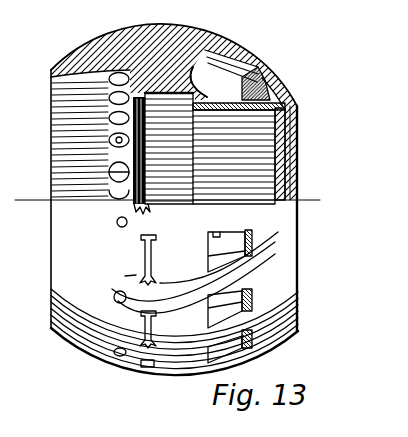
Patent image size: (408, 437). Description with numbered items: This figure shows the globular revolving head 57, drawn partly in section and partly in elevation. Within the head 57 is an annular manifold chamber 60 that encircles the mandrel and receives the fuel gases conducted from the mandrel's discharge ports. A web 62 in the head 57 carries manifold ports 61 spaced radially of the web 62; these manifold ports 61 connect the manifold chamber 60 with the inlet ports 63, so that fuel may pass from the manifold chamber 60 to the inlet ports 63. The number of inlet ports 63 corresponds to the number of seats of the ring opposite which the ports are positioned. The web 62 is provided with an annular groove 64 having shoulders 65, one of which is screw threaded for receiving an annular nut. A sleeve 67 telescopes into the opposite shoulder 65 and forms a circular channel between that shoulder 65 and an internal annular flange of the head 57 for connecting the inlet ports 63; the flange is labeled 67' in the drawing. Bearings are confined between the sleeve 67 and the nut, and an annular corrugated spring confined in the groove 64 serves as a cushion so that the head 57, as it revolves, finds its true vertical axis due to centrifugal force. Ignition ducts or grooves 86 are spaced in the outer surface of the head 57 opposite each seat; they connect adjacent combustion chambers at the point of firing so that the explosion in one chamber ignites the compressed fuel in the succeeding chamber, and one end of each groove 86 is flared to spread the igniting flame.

The head 57 is at (97, 53).
The annular manifold chamber 60 is at (62, 99).
The manifold ports 61 is at (170, 32).
The web 62 is at (195, 43).
The inlet ports 63 is at (255, 67).
The annular groove 64 is at (258, 186).
The shoulders 65 is at (133, 93).
The sleeve 67 is at (299, 153).
The sealing band 67' is at (255, 87).
The ignition ducts or grooves 86 is at (141, 257).